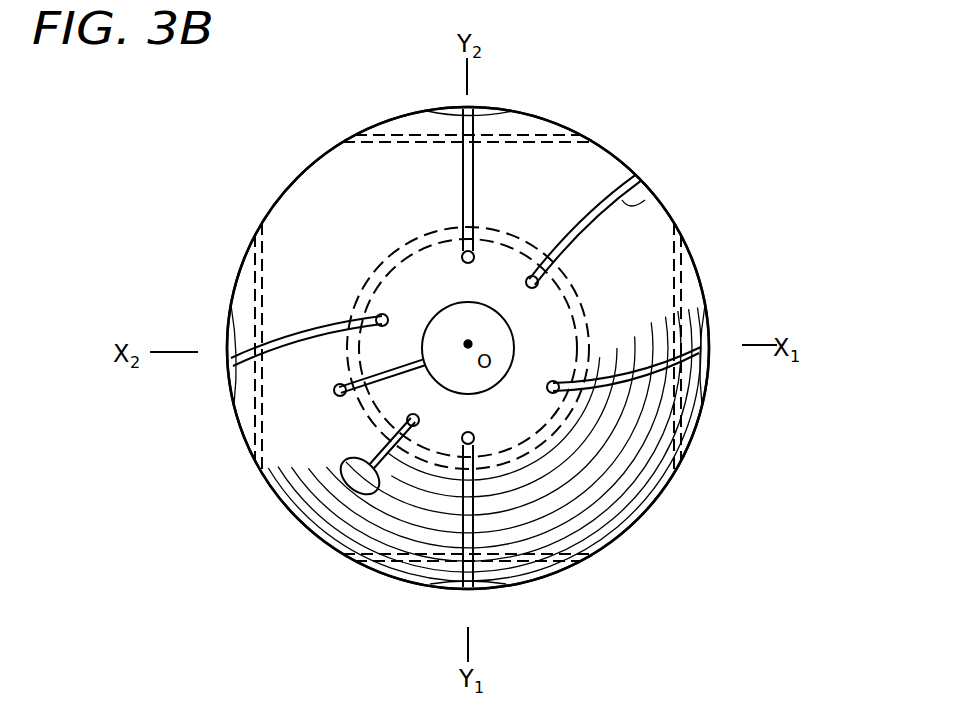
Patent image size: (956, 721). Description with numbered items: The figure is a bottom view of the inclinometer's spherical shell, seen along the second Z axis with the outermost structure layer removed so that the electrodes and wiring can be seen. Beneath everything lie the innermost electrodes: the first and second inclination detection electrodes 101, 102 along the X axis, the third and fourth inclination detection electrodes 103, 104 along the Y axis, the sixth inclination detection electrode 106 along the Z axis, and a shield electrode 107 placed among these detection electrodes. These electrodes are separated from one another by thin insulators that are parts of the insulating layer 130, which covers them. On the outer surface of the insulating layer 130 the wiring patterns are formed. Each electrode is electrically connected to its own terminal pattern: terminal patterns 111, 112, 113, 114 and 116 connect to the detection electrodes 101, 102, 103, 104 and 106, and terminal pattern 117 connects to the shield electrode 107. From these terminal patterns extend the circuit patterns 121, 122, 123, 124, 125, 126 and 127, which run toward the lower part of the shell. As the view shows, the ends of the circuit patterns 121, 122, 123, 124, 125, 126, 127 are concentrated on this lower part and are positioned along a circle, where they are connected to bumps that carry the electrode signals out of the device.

The first inclination detection electrode 101 is at (700, 288).
The second inclination detection electrode 102 is at (250, 405).
The third inclination detection electrode 103 is at (540, 588).
The fourth inclination detection electrode 104 is at (523, 132).
The sixth inclination detection electrode 106 is at (578, 283).
The shield electrode 107 is at (300, 523).
The terminal pattern 111 is at (700, 338).
The terminal pattern 112 is at (245, 362).
The terminal pattern 113 is at (540, 588).
The terminal pattern 114 is at (473, 110).
The terminal pattern 116 is at (487, 312).
The terminal pattern 117 is at (345, 473).
The circuit pattern 121 is at (633, 398).
The circuit pattern 122 is at (306, 330).
The circuit pattern 123 is at (462, 505).
The circuit pattern 124 is at (463, 188).
The circuit pattern 125 is at (628, 207).
The circuit pattern 126 is at (395, 378).
The circuit pattern 127 is at (340, 548).
The insulating layer 130 is at (333, 190).